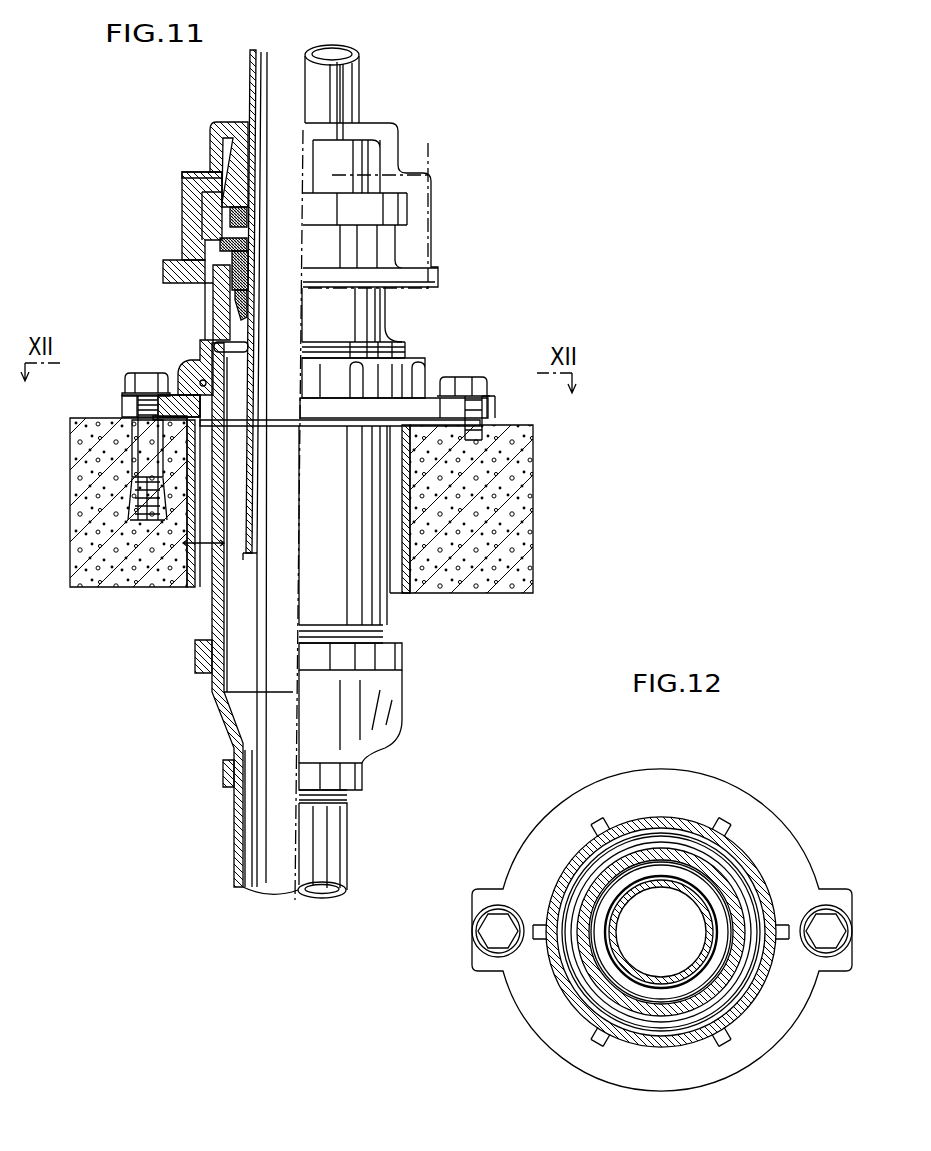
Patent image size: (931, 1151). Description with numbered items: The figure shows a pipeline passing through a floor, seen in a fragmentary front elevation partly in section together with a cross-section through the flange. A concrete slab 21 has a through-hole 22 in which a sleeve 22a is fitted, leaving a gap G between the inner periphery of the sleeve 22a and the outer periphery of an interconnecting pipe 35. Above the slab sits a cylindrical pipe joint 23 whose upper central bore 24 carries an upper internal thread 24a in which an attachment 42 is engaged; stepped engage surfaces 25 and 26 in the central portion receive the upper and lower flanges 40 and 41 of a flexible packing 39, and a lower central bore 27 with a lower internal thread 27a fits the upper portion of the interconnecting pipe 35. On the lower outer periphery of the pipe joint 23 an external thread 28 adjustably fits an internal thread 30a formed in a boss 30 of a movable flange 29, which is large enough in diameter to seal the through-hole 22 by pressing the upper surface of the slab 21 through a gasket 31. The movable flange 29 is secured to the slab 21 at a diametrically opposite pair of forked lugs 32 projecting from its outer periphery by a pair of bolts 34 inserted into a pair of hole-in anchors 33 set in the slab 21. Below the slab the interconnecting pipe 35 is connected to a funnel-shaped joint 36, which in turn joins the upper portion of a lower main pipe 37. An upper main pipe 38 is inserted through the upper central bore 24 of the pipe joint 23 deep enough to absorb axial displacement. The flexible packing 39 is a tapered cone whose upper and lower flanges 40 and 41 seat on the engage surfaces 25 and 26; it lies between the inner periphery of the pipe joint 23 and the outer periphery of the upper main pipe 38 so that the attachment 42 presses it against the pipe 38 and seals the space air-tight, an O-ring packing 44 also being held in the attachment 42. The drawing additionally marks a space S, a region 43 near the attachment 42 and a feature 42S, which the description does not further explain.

In FIG. 11, the concrete slab 21 is at (90, 588).
In FIG. 11, the through-hole 22 is at (192, 592).
In FIG. 11, the sleeve 22a is at (187, 557).
In FIG. 11, the pipe joint 23 is at (403, 203).
In FIG. 12, the pipe joint 23 is at (750, 887).
In FIG. 11, the upper central bore 24 is at (207, 232).
In FIG. 11, the upper internal thread 24a is at (205, 198).
In FIG. 11, the stepped engage surface 25 is at (195, 272).
In FIG. 11, the stepped engage surface 26 is at (222, 300).
In FIG. 11, the lower central bore 27 is at (250, 353).
In FIG. 11, the lower internal thread 27a is at (195, 364).
In FIG. 12, the lower internal thread 27a is at (634, 1002).
In FIG. 11, the external thread 28 is at (388, 340).
In FIG. 11, the movable flange 29 is at (440, 410).
In FIG. 12, the movable flange 29 is at (688, 778).
In FIG. 11, the boss 30 is at (408, 372).
In FIG. 12, the boss 30 is at (701, 823).
In FIG. 11, the internal thread 30a is at (182, 385).
In FIG. 12, the internal thread 30a is at (734, 866).
In FIG. 11, the gasket 31 is at (340, 424).
In FIG. 11, the forked lugs 32 is at (488, 412).
In FIG. 12, the forked lugs 32 is at (477, 899).
In FIG. 11, the hole-in anchors 33 is at (138, 455).
In FIG. 11, the bolts 34 is at (472, 385).
In FIG. 12, the bolts 34 is at (488, 936).
In FIG. 11, the interconnecting pipe 35 is at (226, 603).
In FIG. 12, the interconnecting pipe 35 is at (590, 1003).
In FIG. 11, the funnel-shaped joint 36 is at (378, 714).
In FIG. 11, the lower main pipe 37 is at (340, 826).
In FIG. 11, the upper main pipe 38 is at (348, 83).
In FIG. 12, the upper main pipe 38 is at (690, 978).
In FIG. 11, the flexible packing 39 is at (248, 280).
In FIG. 11, the upper flange 40 is at (248, 250).
In FIG. 11, the lower flange 41 is at (250, 300).
In FIG. 11, the attachment 42 is at (226, 138).
In FIG. 11, the boot slit 42S is at (213, 116).
In FIG. 11, the slit 43 is at (222, 200).
In FIG. 11, the O-ring packing 44 is at (248, 218).
In FIG. 11, the space S is at (250, 118).
In FIG. 11, the gap G is at (203, 531).